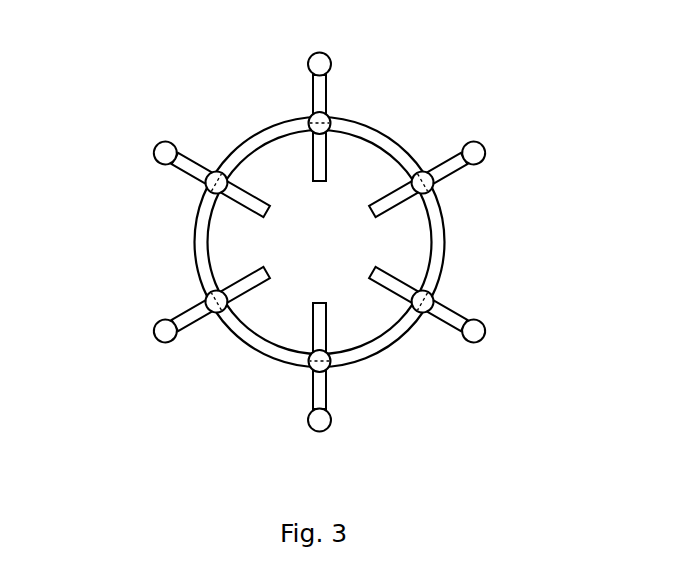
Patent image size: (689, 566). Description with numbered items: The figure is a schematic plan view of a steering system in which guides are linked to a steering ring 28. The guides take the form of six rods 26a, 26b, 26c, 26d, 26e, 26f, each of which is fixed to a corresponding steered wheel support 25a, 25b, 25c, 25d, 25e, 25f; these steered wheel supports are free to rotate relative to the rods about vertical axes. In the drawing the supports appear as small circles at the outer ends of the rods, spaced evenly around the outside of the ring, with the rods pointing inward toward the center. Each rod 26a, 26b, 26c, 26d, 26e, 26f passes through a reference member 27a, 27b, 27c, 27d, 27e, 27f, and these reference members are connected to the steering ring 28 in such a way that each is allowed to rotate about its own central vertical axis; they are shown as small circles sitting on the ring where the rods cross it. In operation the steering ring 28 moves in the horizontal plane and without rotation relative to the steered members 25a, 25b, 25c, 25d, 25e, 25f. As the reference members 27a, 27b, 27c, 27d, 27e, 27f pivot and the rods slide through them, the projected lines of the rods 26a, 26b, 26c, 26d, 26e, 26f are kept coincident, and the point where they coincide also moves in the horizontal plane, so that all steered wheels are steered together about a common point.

The steered wheel support 25a is at (333, 53).
The steered wheel support 25b is at (149, 150).
The steered wheel support 25c is at (150, 339).
The steered wheel support 25d is at (303, 432).
The steered wheel support 25e is at (488, 328).
The steered wheel support 25f is at (492, 148).
The rod 26a is at (308, 95).
The rod 26b is at (248, 215).
The rod 26c is at (198, 328).
The rod 26d is at (327, 393).
The rod 26e is at (457, 307).
The rod 26f is at (443, 157).
The reference member 27a is at (332, 112).
The reference member 27b is at (213, 172).
The reference member 27c is at (198, 298).
The reference member 27d is at (305, 373).
The reference member 27e is at (425, 317).
The reference member 27f is at (435, 190).
The steering ring 28 is at (190, 242).